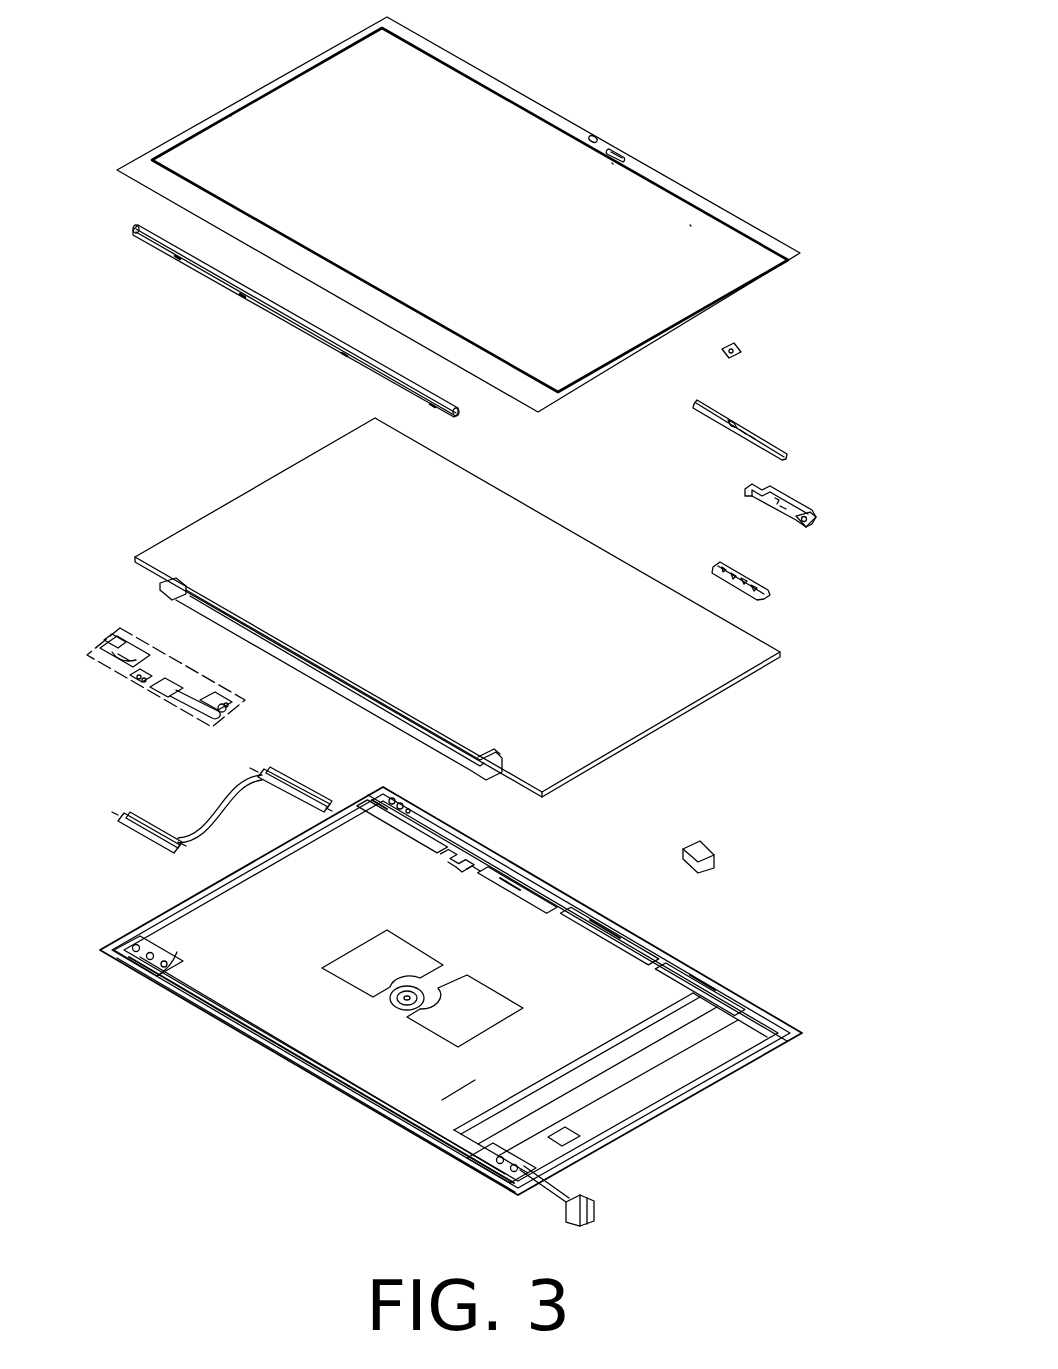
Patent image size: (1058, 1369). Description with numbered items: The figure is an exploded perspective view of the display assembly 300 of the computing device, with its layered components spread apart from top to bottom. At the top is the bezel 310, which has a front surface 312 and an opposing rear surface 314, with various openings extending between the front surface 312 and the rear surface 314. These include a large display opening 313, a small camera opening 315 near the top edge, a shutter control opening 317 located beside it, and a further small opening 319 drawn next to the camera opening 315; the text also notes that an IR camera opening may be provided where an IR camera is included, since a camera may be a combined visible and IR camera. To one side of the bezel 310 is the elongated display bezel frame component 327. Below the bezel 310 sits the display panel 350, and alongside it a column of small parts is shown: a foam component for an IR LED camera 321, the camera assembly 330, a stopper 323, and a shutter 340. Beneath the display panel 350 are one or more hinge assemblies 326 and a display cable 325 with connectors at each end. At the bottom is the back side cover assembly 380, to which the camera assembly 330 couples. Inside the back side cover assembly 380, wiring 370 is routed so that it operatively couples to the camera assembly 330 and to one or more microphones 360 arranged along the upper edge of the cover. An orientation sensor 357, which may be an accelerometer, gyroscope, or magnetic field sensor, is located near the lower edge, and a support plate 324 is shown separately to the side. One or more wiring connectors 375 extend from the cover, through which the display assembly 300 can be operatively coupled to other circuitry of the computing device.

The display assembly 300 is at (166, 26).
The bezel 310 is at (800, 254).
The front surface 312 is at (676, 184).
The display opening 313 is at (532, 115).
The rear surface 314 is at (691, 227).
The camera opening 315 is at (597, 133).
The shutter control opening 317 is at (613, 163).
The slot opening 319 is at (608, 144).
The foam component for an IR LED camera 321 is at (740, 353).
The stopper 323 is at (813, 513).
The support plate 324 is at (714, 857).
The display cable 325 is at (232, 805).
The hinge assemblies 326 is at (140, 688).
The display bezel frame component 327 is at (134, 236).
The camera assembly 330 is at (748, 430).
The shutter 340 is at (768, 595).
The display panel 350 is at (733, 677).
The orientation sensor 357 is at (582, 1133).
The microphones 360 is at (468, 843).
The wiring 370 is at (595, 947).
The wiring connectors 375 is at (597, 1215).
The back side cover assembly 380 is at (675, 1108).